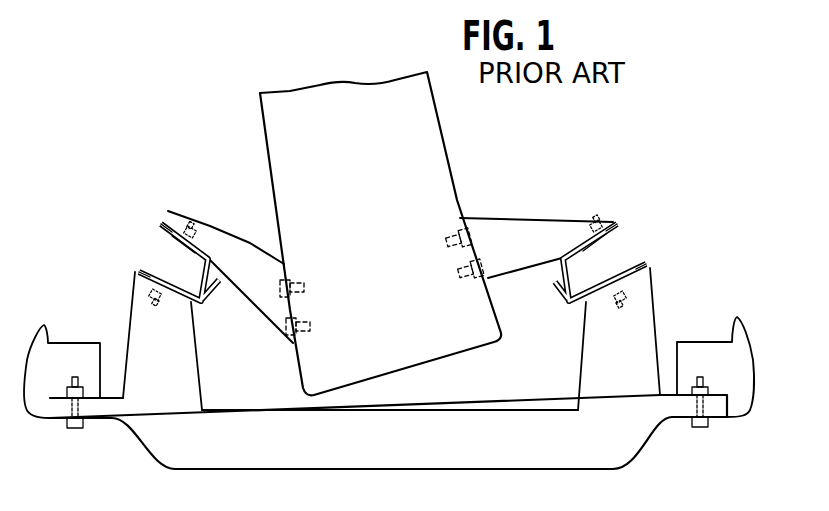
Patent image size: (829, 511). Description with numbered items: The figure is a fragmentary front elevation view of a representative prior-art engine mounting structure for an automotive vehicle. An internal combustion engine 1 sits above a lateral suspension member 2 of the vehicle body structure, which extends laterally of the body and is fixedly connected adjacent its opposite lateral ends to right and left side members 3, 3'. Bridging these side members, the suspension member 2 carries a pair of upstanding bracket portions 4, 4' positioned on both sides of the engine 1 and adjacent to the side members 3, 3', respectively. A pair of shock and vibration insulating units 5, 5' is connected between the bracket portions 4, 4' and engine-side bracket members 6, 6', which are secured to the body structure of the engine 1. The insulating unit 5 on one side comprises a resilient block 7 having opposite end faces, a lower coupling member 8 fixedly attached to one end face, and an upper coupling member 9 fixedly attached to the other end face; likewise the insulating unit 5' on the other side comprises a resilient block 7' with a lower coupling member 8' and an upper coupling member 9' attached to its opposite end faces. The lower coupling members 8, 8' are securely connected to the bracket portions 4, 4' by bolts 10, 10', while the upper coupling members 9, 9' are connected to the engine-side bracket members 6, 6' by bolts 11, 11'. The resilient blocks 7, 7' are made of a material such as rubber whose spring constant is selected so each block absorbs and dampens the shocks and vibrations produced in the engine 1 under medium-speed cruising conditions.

The internal combustion engine 1 is at (445, 122).
The lateral suspension member 2 is at (450, 410).
The side member 3 is at (62, 363).
The side member 3' is at (715, 364).
The upstanding bracket portion 4 is at (179, 341).
The upstanding bracket portion 4' is at (600, 339).
The shock and vibration insulating unit 5 is at (164, 262).
The shock and vibration insulating unit 5' is at (619, 258).
The engine-side bracket member 6 is at (230, 274).
The engine-side bracket member 6' is at (536, 228).
The resilient block 7 is at (166, 234).
The resilient block 7' is at (621, 228).
The lower coupling member 8 is at (127, 292).
The lower coupling member 8' is at (664, 278).
The upper coupling member 9 is at (160, 214).
The upper coupling member 9' is at (621, 211).
The bolt 10 is at (166, 320).
The bolt 10' is at (614, 314).
The bolt 11 is at (198, 209).
The bolt 11' is at (594, 204).